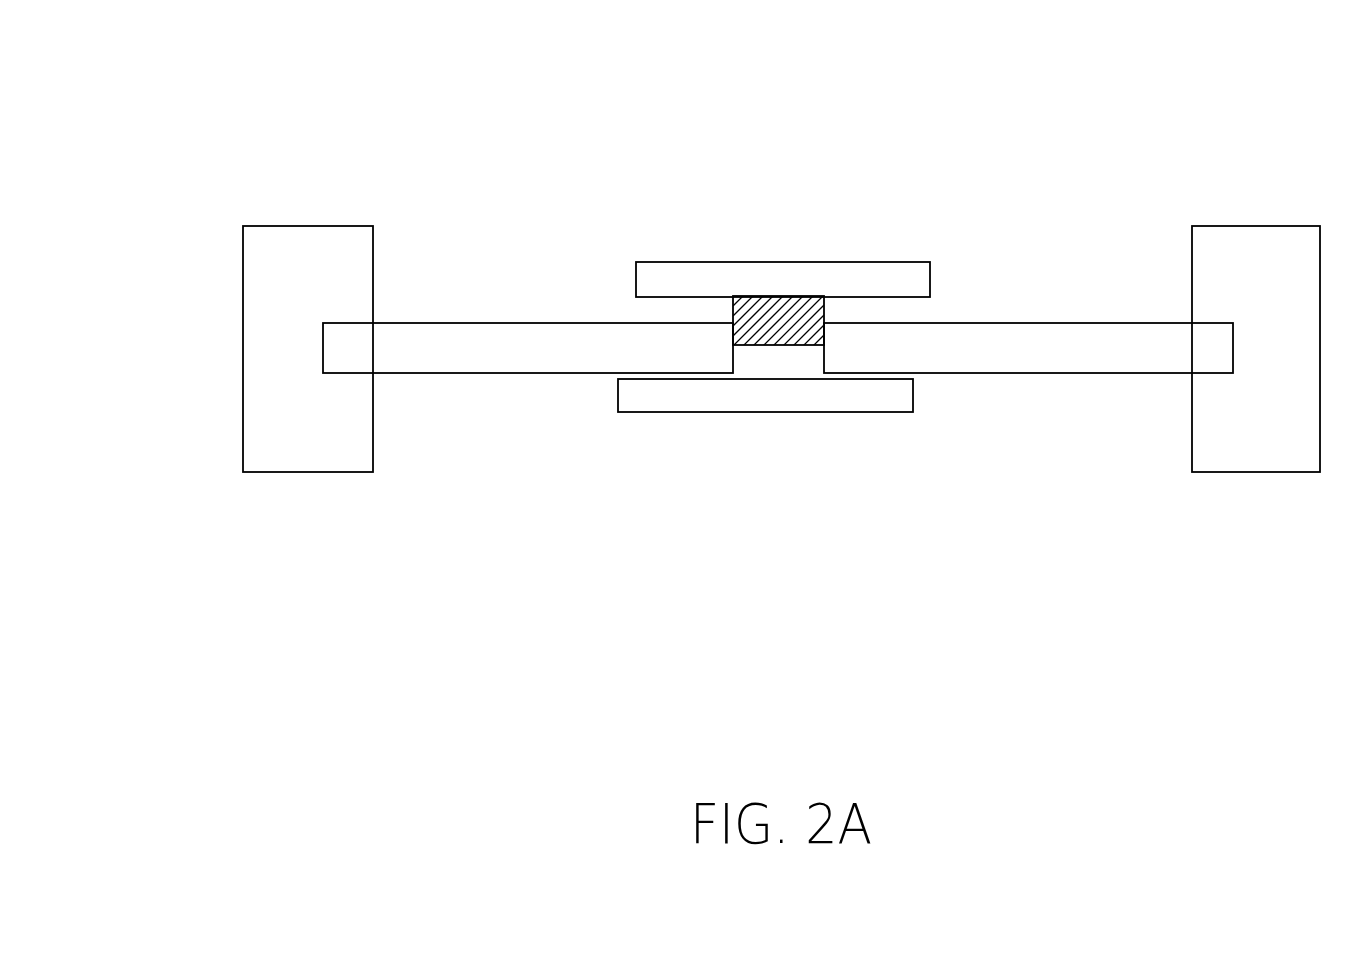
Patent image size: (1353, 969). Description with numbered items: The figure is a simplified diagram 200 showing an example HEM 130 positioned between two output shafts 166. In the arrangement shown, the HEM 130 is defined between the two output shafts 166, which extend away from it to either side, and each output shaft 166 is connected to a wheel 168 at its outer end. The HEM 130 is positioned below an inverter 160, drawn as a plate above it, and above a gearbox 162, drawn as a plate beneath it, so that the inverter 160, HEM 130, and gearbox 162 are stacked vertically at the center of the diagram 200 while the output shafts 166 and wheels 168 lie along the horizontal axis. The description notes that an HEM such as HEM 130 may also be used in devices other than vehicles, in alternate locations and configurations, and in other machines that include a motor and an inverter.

The simplified diagram 200 is at (149, 109).
The HEM 130 is at (826, 308).
The inverter 160 is at (754, 262).
The gearbox 162 is at (754, 412).
The output shaft 166 is at (502, 373).
The wheel 168 is at (307, 472).